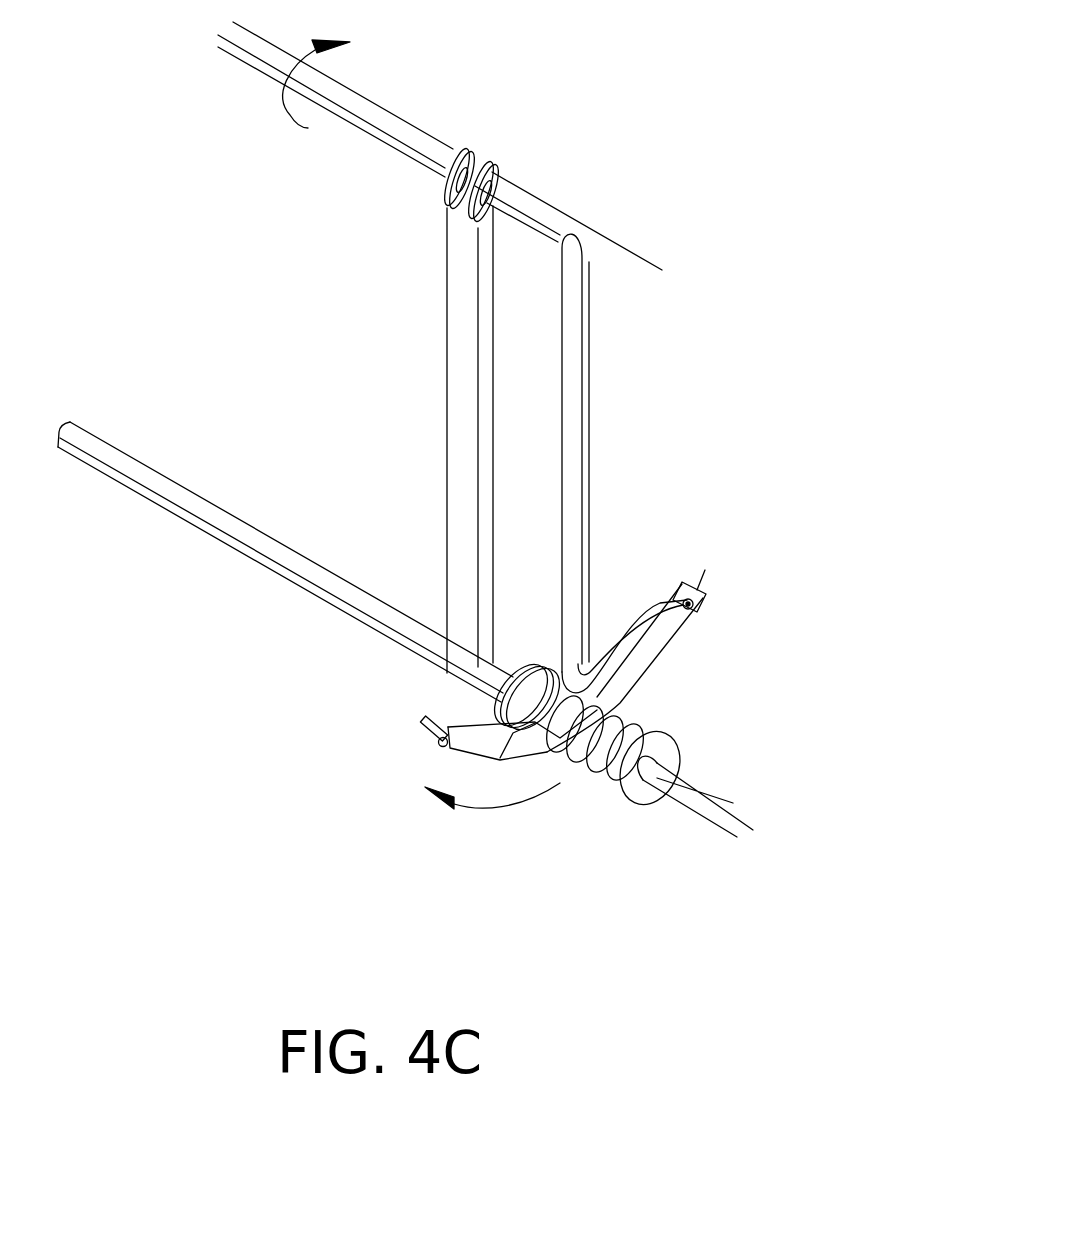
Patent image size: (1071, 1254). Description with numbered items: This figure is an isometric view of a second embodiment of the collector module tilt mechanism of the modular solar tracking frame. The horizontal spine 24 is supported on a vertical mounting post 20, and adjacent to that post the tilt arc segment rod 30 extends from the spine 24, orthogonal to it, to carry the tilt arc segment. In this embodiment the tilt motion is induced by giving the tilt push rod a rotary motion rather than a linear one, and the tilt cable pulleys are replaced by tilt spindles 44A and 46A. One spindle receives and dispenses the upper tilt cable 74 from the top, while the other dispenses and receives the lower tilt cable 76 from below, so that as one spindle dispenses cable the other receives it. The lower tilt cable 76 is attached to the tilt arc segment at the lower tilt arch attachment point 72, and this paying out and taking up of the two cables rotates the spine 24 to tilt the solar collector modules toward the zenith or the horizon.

The horizontal spine 24 is at (245, 60).
The vertical mounting post 20 is at (463, 302).
The tilt arc segment rod 30 is at (575, 369).
The lower tilt cable 76 is at (468, 724).
The tilt spindle 46A is at (527, 667).
The tilt spindle 44A is at (663, 737).
The upper tilt cable 74 is at (645, 672).
The lower tilt arch attachment point 72 is at (438, 743).